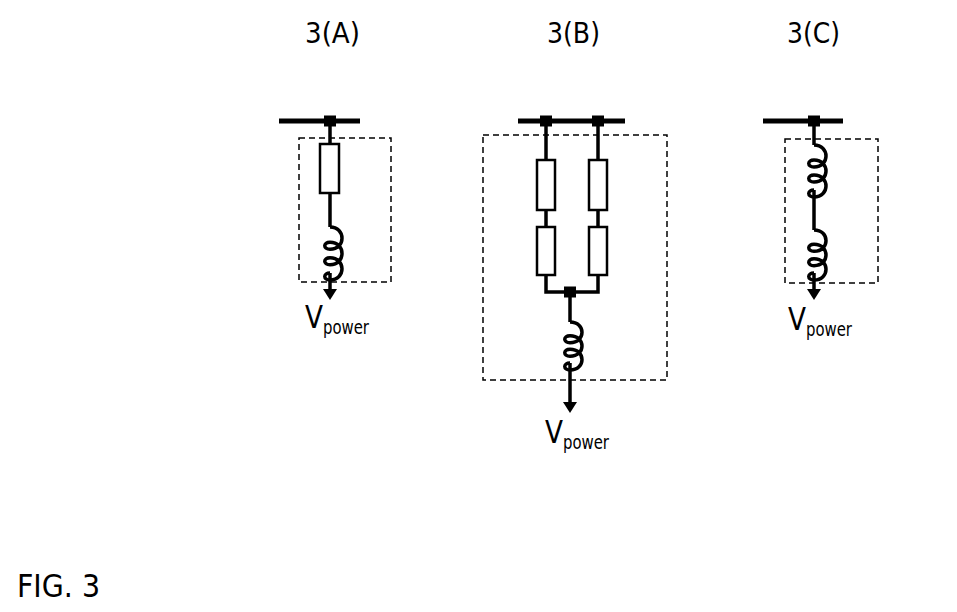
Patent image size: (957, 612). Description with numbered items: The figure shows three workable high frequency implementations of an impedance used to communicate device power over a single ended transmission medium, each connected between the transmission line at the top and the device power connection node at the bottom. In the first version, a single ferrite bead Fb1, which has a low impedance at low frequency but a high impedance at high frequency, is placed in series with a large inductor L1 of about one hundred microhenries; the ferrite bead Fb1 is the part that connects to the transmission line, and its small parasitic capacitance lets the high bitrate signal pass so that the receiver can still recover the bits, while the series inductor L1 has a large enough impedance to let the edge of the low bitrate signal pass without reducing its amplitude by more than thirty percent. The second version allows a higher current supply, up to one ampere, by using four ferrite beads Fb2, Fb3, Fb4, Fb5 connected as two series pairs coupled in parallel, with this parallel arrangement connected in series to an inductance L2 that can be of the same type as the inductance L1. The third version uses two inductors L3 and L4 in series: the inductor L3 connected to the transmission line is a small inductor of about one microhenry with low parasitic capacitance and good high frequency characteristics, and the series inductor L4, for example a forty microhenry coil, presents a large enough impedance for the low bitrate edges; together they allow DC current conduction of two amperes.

The ferrite bead Fb1 is at (353, 168).
The ferrite bead Fb2 is at (523, 185).
The ferrite bead Fb3 is at (620, 185).
The ferrite bead Fb4 is at (522, 251).
The ferrite bead Fb5 is at (620, 251).
The inductor L1 is at (350, 253).
The inductance L2 is at (590, 346).
The inductor L3 is at (835, 171).
The inductor L4 is at (835, 255).